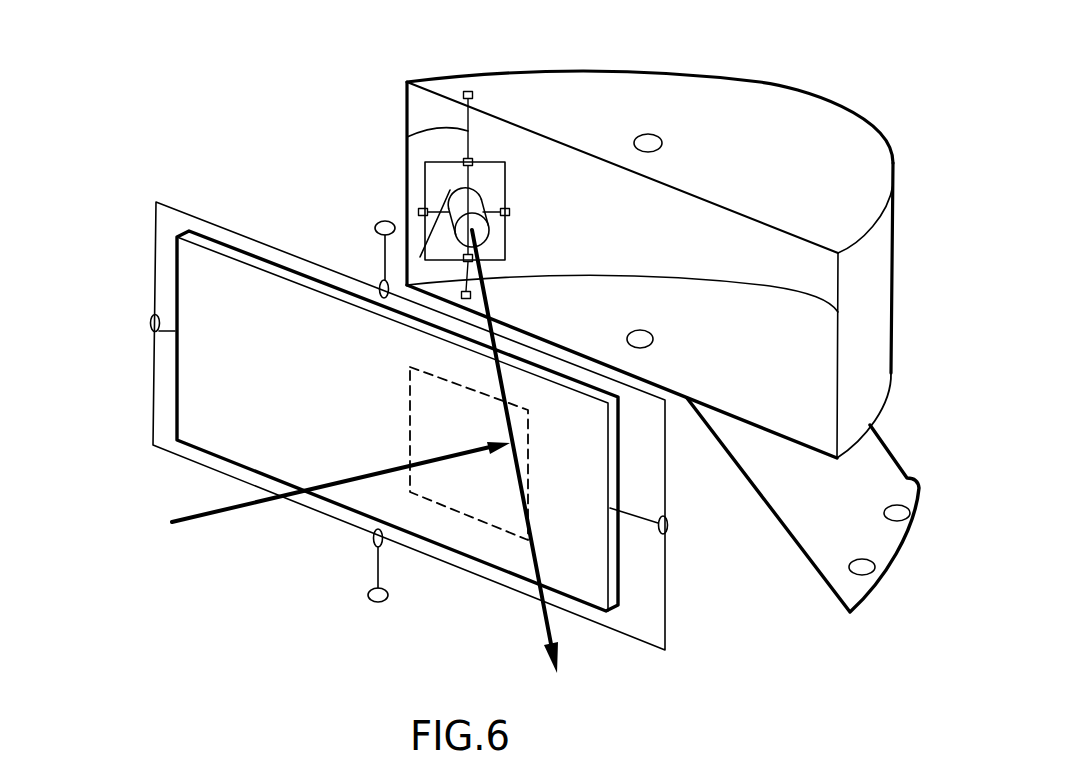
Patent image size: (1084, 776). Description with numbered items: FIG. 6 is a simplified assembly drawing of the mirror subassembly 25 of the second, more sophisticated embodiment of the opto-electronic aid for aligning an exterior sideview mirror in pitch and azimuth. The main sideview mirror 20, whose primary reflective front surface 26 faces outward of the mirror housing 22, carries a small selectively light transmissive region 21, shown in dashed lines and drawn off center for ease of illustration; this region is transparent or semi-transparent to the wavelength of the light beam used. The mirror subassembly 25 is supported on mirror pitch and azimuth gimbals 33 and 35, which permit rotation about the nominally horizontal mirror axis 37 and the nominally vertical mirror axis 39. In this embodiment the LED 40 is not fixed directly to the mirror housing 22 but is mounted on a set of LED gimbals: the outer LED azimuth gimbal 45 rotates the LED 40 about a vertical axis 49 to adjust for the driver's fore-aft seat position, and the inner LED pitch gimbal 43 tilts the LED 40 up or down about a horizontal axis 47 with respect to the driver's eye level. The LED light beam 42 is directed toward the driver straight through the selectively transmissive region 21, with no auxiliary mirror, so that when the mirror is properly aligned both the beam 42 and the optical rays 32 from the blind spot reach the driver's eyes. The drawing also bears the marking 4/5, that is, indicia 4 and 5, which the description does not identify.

The housing part 4 is at (663, 326).
The housing part 5 is at (663, 326).
The main sideview mirror 20 is at (236, 250).
The selectively transmissive region 21 is at (450, 413).
The mirror housing 22 is at (790, 165).
The mirror subassembly 25 is at (282, 193).
The primary reflective front surface 26 is at (245, 355).
The optical rays 32 is at (250, 512).
The mirror pitch gimbal 33 is at (150, 321).
The mirror azimuth gimbal 35 is at (376, 226).
The horizontal mirror axis 37 is at (170, 333).
The vertical mirror axis 39 is at (383, 253).
The LED 40 is at (467, 197).
The light beam 42 is at (543, 632).
The LED pitch gimbal 43 is at (507, 187).
The LED azimuth gimbal 45 is at (392, 217).
The horizontal axis 47 is at (407, 143).
The vertical axis 49 is at (392, 217).